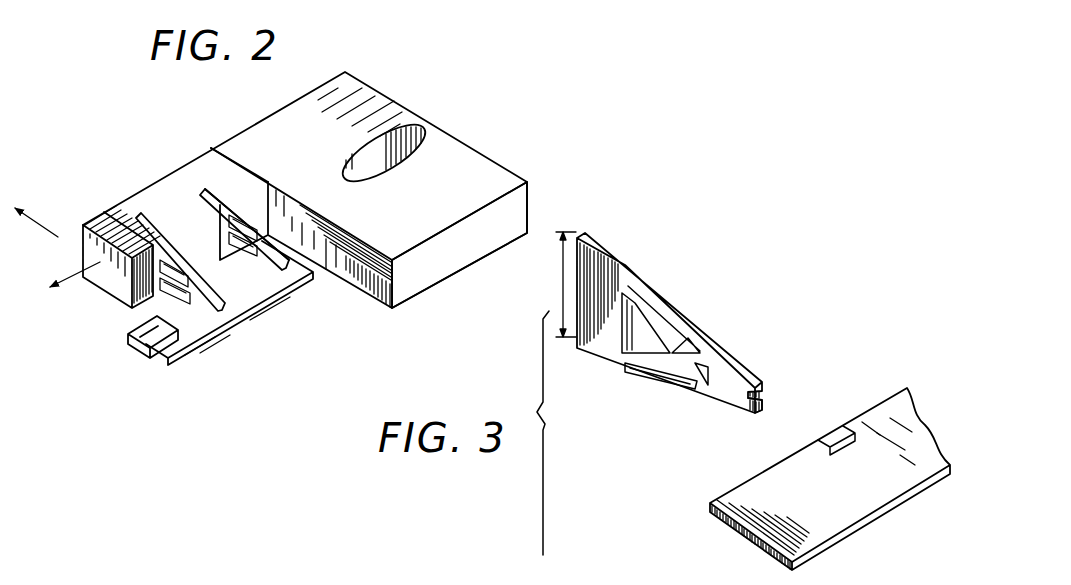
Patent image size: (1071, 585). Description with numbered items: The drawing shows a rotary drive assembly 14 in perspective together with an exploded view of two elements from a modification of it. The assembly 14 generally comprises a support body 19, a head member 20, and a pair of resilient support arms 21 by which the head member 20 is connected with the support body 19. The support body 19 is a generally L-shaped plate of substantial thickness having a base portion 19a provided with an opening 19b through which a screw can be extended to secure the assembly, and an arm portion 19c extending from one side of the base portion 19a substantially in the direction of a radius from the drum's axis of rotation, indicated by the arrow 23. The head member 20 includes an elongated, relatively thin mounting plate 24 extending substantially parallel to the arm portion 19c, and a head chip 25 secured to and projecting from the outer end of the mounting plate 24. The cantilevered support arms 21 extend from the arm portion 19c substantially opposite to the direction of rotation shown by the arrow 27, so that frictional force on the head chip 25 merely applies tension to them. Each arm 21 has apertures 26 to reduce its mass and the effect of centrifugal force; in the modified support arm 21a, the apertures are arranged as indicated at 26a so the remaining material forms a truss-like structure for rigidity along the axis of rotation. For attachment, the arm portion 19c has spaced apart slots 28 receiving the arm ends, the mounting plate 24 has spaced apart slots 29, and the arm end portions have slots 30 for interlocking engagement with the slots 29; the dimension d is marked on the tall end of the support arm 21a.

In FIG. 2, the rotary drive assembly 14 is at (500, 150).
In FIG. 2, the support body 19 is at (346, 100).
In FIG. 2, the base portion 19a is at (490, 182).
In FIG. 2, the opening 19b is at (400, 140).
In FIG. 2, the arm portion 19c is at (196, 165).
In FIG. 2, the head member 20 is at (196, 281).
In FIG. 2, the resilient support arm 21 is at (243, 220).
In FIG. 3, the support arm 21a is at (617, 250).
In FIG. 2, the arrow indicating radial direction 23 is at (72, 283).
In FIG. 2, the mounting plate 24 is at (242, 307).
In FIG. 3, the mounting plate 24 is at (757, 494).
In FIG. 2, the head chip 25 is at (136, 352).
In FIG. 2, the apertures 26 is at (243, 237).
In FIG. 3, the truss-like aperture arrangement 26a is at (680, 373).
In FIG. 2, the arrow indicating direction of rotation 27 is at (40, 225).
In FIG. 2, the slots 28 is at (206, 193).
In FIG. 3, the slots 29 is at (830, 444).
In FIG. 3, the slots 30 is at (742, 402).
In FIG. 3, the height dimension d is at (558, 284).